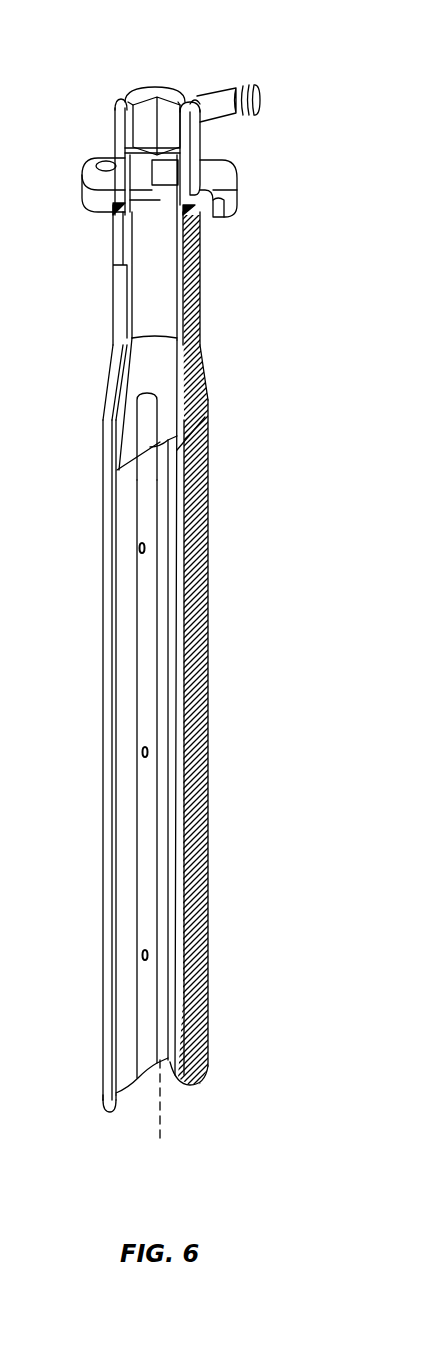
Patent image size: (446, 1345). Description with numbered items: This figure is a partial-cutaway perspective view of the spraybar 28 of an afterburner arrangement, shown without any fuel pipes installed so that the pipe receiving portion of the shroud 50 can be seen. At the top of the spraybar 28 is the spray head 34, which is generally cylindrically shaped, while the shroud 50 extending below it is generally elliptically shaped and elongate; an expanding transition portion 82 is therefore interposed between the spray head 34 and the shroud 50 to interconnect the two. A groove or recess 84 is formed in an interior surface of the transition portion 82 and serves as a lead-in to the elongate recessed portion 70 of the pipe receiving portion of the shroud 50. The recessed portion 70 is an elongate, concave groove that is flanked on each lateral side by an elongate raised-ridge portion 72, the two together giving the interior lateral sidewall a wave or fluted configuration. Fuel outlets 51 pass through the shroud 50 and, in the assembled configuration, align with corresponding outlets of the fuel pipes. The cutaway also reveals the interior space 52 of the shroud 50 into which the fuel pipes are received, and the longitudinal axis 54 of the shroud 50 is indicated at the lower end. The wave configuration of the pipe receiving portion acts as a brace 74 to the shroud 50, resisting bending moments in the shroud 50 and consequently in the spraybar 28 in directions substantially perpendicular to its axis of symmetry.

The spraybar 28 is at (136, 46).
The spray head 34 is at (80, 125).
The transition portion 82 is at (96, 381).
The groove or recess 84 is at (145, 428).
The shroud 50 is at (197, 500).
The fuel outlets 51 is at (140, 551).
The recessed portion 70 is at (147, 650).
The raised-ridge portion 72 is at (138, 872).
The interior space 52 is at (160, 637).
The brace 74 is at (140, 1102).
The longitudinal axis 54 is at (160, 1138).